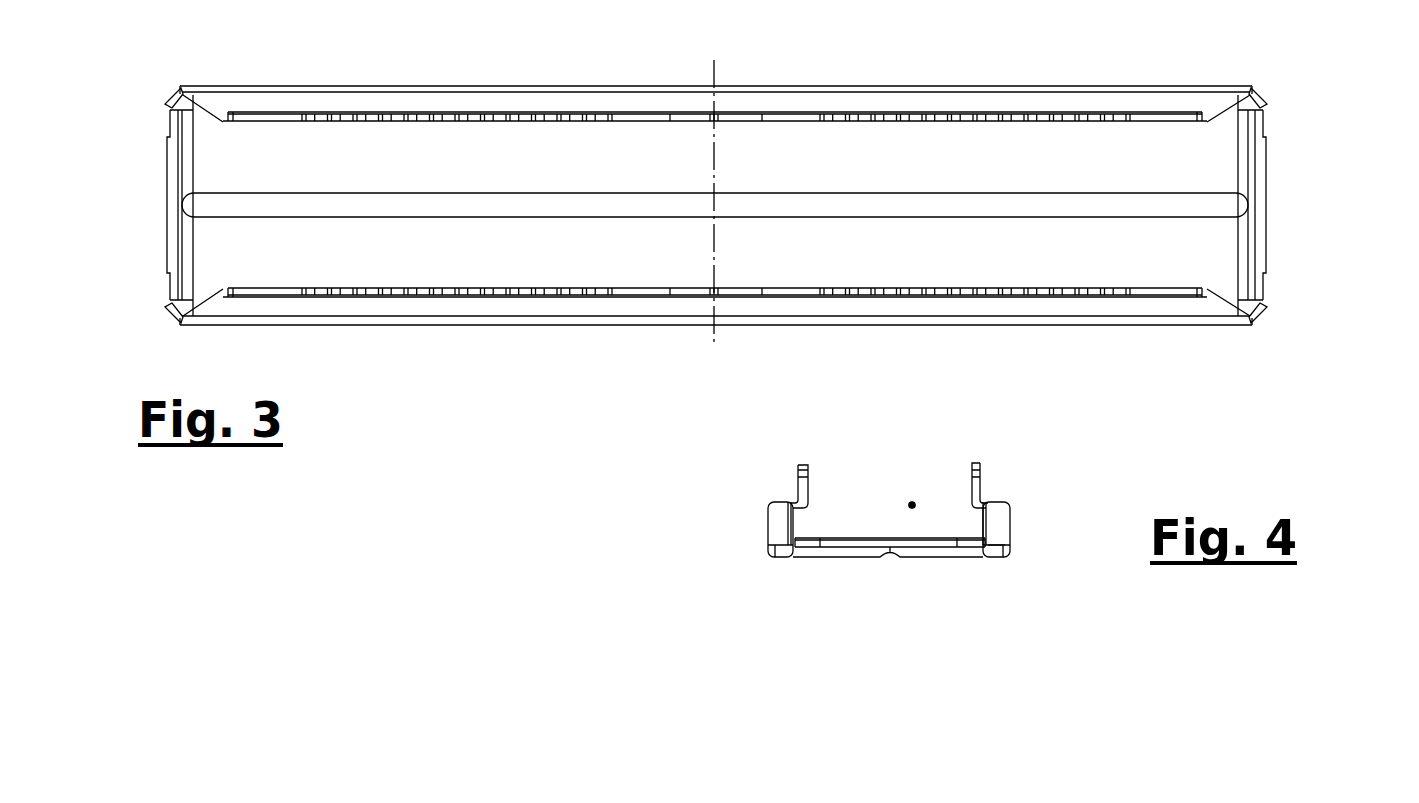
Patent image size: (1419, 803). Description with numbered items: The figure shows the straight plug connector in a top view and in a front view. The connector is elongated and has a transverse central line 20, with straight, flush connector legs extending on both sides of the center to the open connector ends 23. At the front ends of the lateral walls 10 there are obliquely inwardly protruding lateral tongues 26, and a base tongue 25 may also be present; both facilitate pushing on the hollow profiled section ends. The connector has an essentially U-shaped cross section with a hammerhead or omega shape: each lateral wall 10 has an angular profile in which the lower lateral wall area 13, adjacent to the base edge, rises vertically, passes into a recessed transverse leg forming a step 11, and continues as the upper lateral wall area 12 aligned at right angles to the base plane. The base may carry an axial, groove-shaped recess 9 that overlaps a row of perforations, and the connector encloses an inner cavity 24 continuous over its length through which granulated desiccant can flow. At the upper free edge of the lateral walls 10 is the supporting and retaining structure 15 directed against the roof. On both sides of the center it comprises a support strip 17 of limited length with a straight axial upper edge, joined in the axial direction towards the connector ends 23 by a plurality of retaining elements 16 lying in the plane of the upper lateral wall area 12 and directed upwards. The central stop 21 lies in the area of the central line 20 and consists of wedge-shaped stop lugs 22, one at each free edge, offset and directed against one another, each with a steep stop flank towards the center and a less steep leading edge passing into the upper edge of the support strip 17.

In FIG. 3, the groove-shaped recess 9 is at (932, 210).
In FIG. 4, the groove-shaped recess 9 is at (890, 558).
In FIG. 3, the lateral walls 10 is at (483, 87).
In FIG. 4, the lateral walls 10 is at (768, 526).
In FIG. 3, the step 11 is at (380, 107).
In FIG. 4, the step 11 is at (786, 500).
In FIG. 4, the upper lateral wall area 12 is at (800, 483).
In FIG. 4, the lower lateral wall area 13 is at (1008, 530).
In FIG. 3, the supporting and retaining structure 15 is at (600, 103).
In FIG. 4, the supporting and retaining structure 15 is at (965, 472).
In FIG. 3, the retaining elements 16 is at (927, 118).
In FIG. 4, the retaining elements 16 is at (977, 463).
In FIG. 3, the support strip 17 is at (792, 118).
In FIG. 3, the transverse central line 20 is at (713, 138).
In FIG. 3, the central stop 21 is at (726, 280).
In FIG. 4, the central stop 21 is at (812, 468).
In FIG. 3, the stop lugs 22 is at (742, 118).
In FIG. 3, the connector end 23 is at (1272, 243).
In FIG. 4, the inner cavity 24 is at (913, 508).
In FIG. 3, the base tongue 25 is at (170, 240).
In FIG. 4, the base tongue 25 is at (833, 541).
In FIG. 3, the lateral tongues 26 is at (1265, 98).
In FIG. 4, the lateral tongues 26 is at (995, 523).